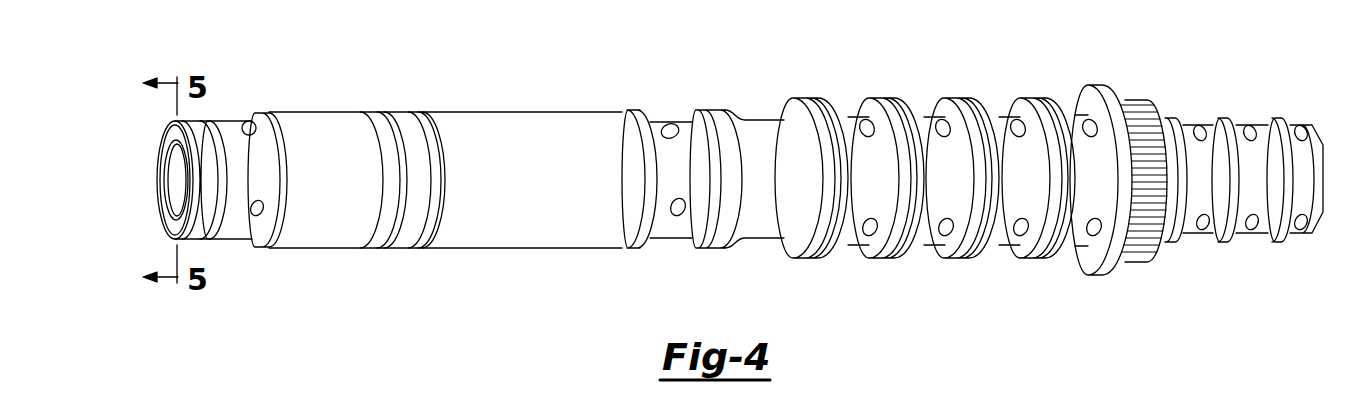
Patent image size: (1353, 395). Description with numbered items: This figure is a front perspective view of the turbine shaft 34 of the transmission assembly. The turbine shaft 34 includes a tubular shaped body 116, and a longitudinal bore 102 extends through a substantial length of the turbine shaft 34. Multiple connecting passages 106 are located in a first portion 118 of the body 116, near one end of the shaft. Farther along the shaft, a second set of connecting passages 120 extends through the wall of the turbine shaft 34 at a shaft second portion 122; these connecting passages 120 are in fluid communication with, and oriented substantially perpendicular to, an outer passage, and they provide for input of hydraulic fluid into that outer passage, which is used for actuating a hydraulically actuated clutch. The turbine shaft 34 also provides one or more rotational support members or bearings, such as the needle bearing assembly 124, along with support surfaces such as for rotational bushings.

The turbine shaft 34 is at (829, 64).
The longitudinal bore 102 is at (166, 178).
The connecting passages 106 is at (247, 124).
The tubular shaped body 116 is at (512, 120).
The first portion 118 is at (240, 230).
The second set of connecting passages 120 is at (668, 127).
The shaft second portion 122 is at (712, 115).
The needle bearing assembly 124 is at (1143, 108).